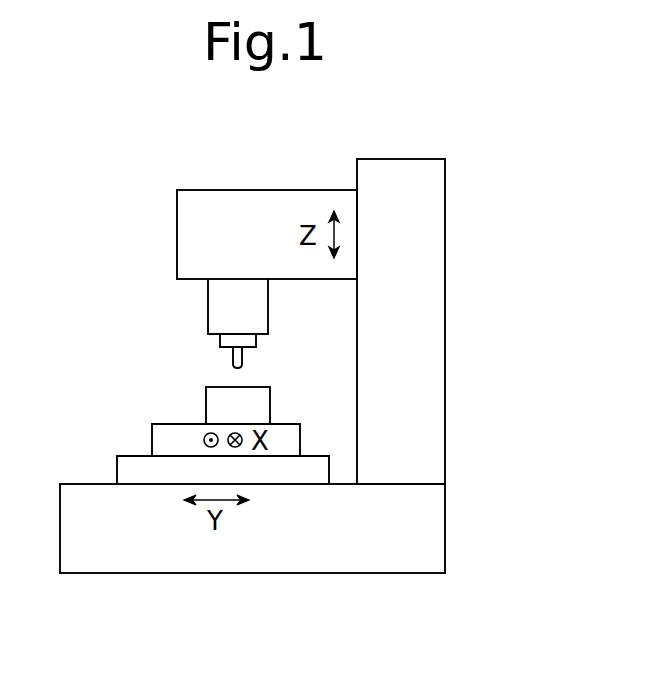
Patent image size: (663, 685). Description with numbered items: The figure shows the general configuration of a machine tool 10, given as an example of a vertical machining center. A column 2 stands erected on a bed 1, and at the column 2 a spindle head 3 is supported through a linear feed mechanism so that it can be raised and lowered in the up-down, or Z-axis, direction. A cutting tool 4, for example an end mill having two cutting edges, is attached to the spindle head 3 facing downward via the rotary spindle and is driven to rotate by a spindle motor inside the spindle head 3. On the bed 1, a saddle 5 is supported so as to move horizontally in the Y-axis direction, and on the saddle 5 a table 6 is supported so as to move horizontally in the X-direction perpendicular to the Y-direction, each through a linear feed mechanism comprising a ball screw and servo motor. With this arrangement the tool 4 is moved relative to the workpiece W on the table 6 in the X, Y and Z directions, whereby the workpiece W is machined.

The bed 1 is at (173, 573).
The column 2 is at (445, 349).
The spindle head 3 is at (177, 212).
The cutting tool 4 is at (233, 358).
The saddle 5 is at (117, 470).
The table 6 is at (152, 437).
The workpiece W is at (206, 400).
The machine tool 10 is at (483, 202).